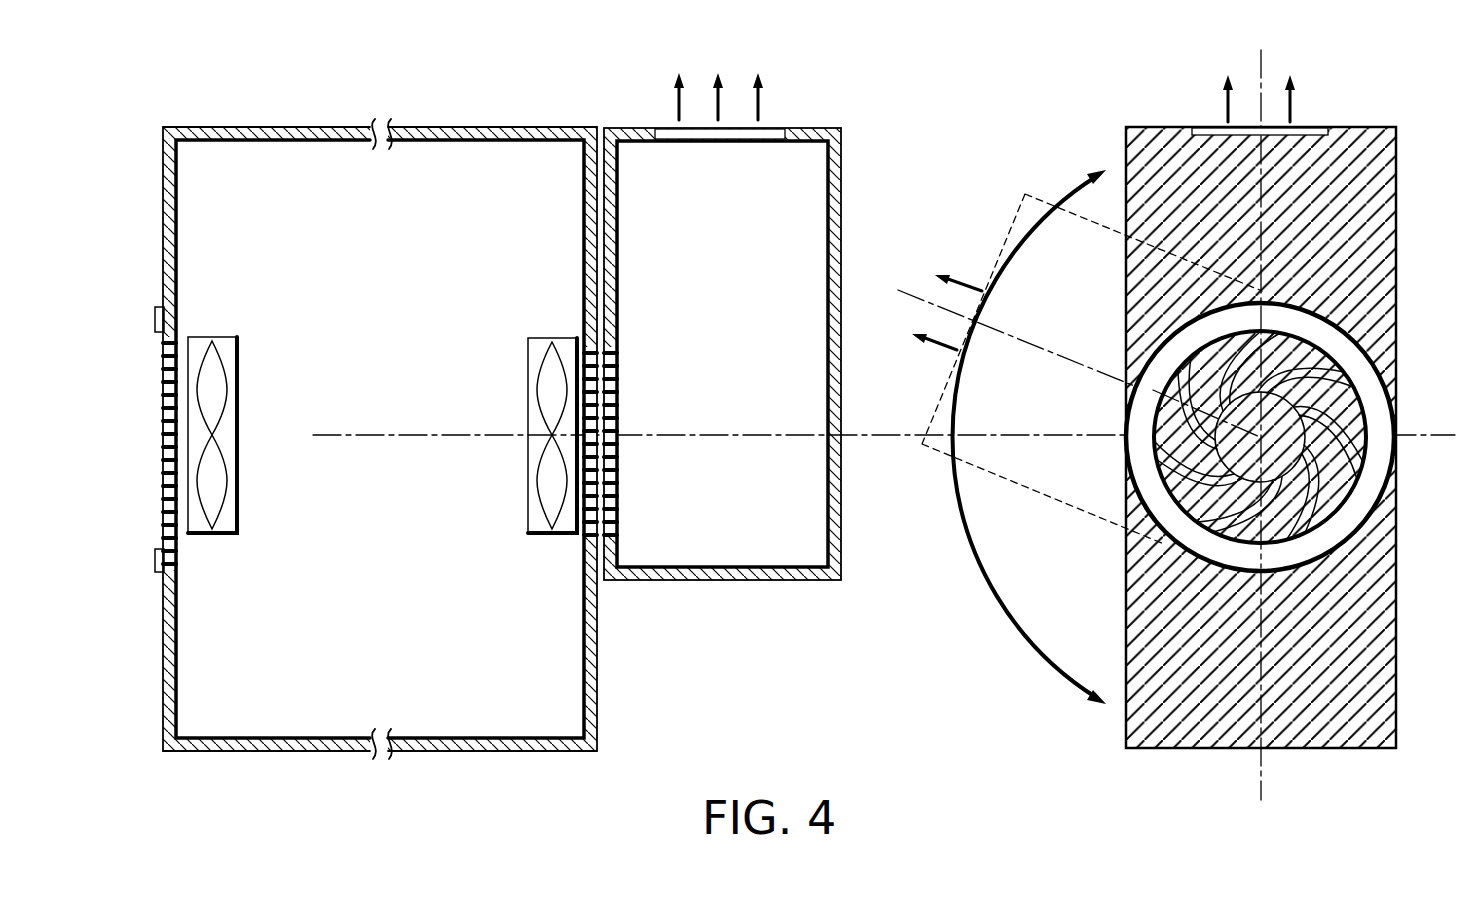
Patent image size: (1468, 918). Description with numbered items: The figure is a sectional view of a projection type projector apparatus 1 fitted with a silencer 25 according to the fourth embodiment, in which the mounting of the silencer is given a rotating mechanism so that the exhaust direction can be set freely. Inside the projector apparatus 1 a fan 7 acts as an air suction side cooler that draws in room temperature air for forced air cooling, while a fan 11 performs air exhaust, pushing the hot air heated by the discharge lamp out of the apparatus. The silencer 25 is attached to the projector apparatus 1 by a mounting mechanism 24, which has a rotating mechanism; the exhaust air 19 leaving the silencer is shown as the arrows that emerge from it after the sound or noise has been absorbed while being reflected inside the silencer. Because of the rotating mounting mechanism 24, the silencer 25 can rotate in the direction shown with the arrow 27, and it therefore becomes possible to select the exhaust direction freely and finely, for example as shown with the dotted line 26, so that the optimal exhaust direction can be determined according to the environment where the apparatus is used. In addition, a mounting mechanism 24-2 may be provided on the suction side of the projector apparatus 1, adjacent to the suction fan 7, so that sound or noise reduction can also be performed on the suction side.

The projection type projector apparatus 1 is at (521, 127).
The fan 7 is at (227, 337).
The fan 11 is at (546, 338).
The exhaust air 19 is at (777, 130).
The mounting mechanism 24 is at (613, 293).
The mounting mechanism 24-2 is at (155, 322).
The silencer 25 is at (1130, 120).
The dotted line 26 is at (1025, 194).
The arrow 27 is at (983, 580).